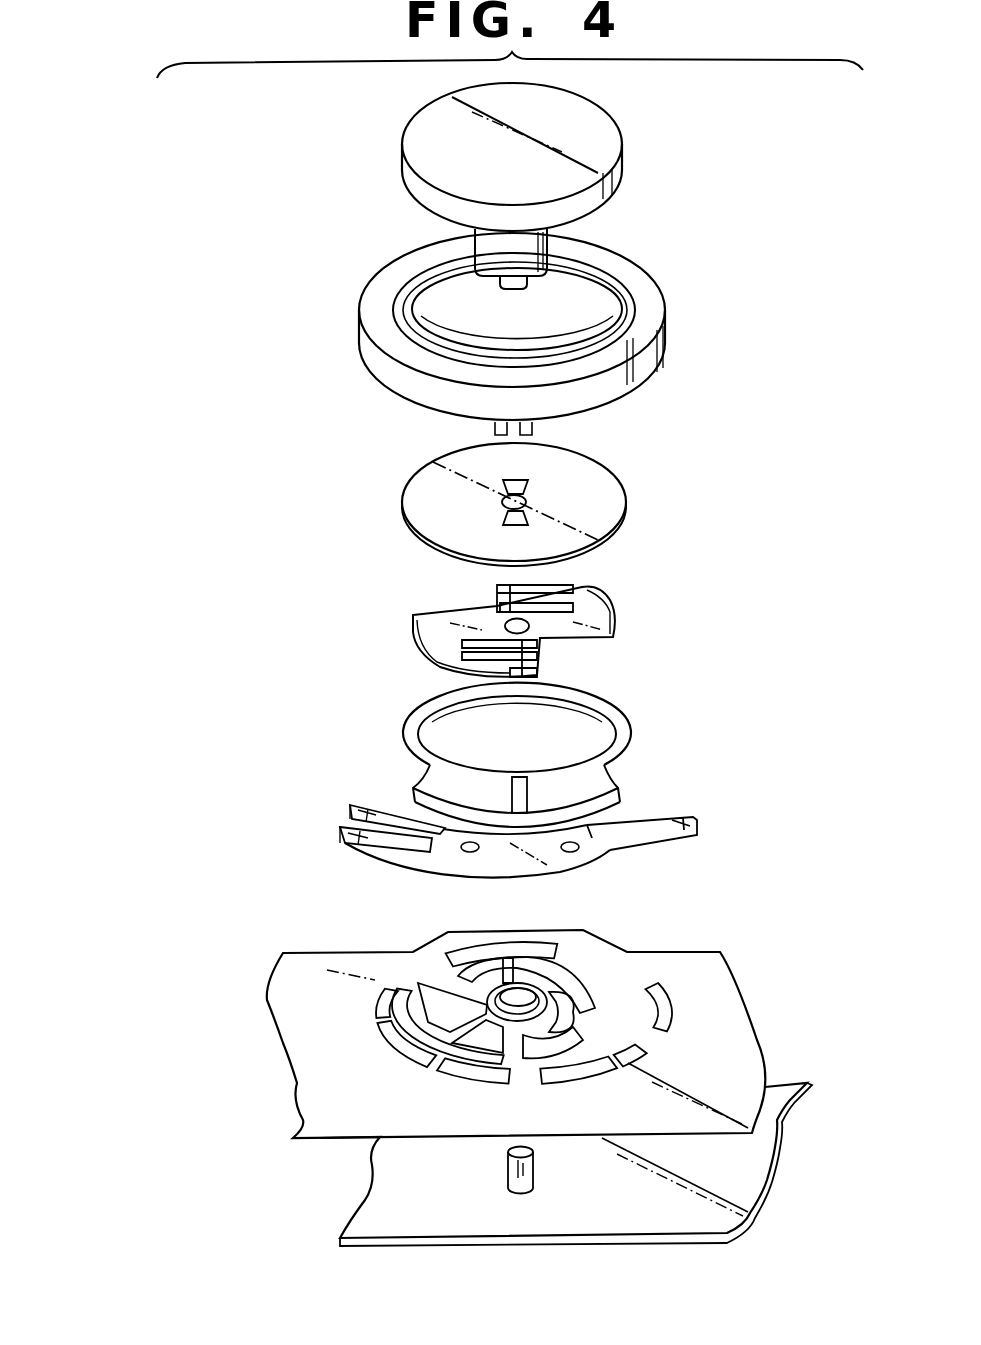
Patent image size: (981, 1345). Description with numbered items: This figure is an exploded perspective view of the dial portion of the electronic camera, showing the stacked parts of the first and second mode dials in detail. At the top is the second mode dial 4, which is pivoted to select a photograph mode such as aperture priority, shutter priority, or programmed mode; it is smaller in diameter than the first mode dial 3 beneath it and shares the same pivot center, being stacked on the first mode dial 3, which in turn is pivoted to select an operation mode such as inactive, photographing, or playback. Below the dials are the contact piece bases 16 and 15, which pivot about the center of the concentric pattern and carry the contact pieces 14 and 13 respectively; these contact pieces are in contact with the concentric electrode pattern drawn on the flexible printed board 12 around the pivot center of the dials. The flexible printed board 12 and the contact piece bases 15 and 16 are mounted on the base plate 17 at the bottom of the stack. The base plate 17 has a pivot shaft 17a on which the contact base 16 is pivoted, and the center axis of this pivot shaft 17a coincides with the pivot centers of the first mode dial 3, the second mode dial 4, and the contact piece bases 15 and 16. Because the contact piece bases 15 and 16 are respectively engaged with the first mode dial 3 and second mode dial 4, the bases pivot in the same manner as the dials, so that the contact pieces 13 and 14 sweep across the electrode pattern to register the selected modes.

The second mode dial 4 is at (622, 148).
The first mode dial 3 is at (667, 310).
The contact piece base 16 is at (627, 502).
The contact piece 14 is at (613, 617).
The contact piece base 15 is at (631, 738).
The contact piece 13 is at (610, 860).
The flexible printed board 12 is at (735, 985).
The base plate 17 is at (775, 1162).
The pivot shaft 17a is at (533, 1170).